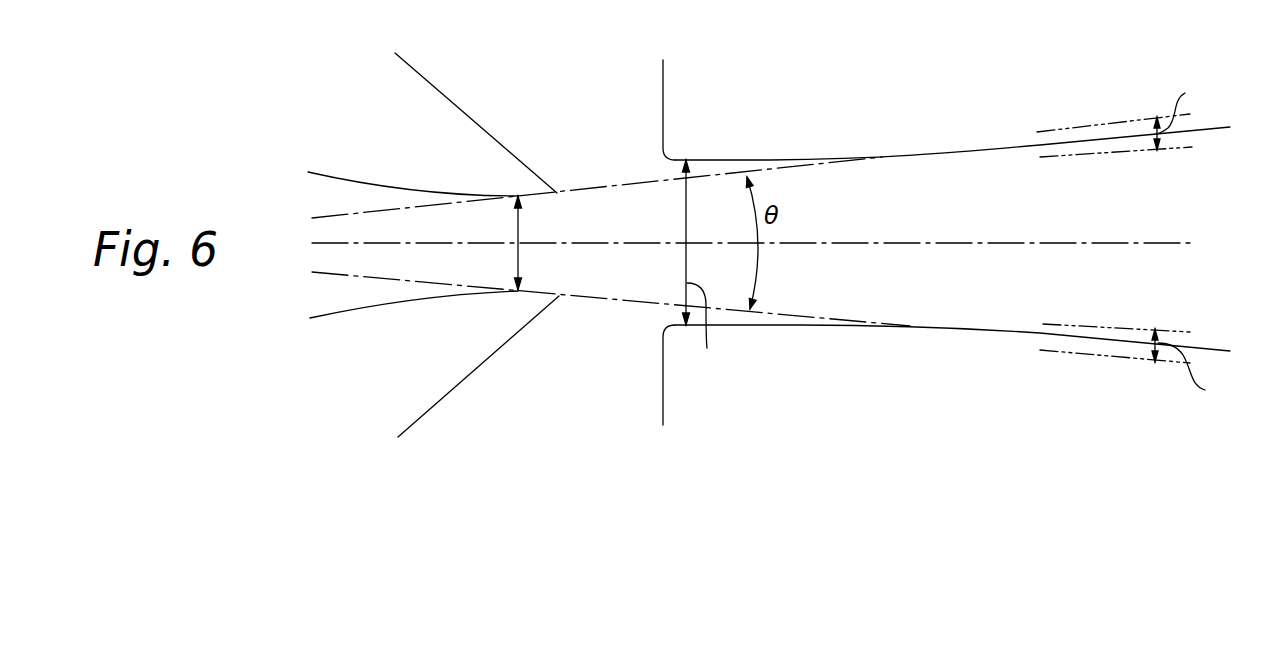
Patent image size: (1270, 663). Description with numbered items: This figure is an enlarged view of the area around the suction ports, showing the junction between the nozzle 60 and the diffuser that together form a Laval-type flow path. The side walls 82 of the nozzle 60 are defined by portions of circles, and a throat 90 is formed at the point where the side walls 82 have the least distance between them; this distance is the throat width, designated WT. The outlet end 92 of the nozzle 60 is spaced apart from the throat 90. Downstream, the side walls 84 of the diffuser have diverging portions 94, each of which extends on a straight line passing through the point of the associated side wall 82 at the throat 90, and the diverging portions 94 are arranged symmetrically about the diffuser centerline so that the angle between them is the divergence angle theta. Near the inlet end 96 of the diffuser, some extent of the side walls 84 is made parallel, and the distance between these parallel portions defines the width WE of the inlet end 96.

The nozzle 60 is at (467, 348).
The side walls 82 is at (353, 183).
The side walls 84 is at (958, 156).
The throat 90 is at (520, 263).
The outlet end 92 is at (557, 193).
The diverging portions 94 is at (996, 152).
The inlet end 96 is at (675, 158).